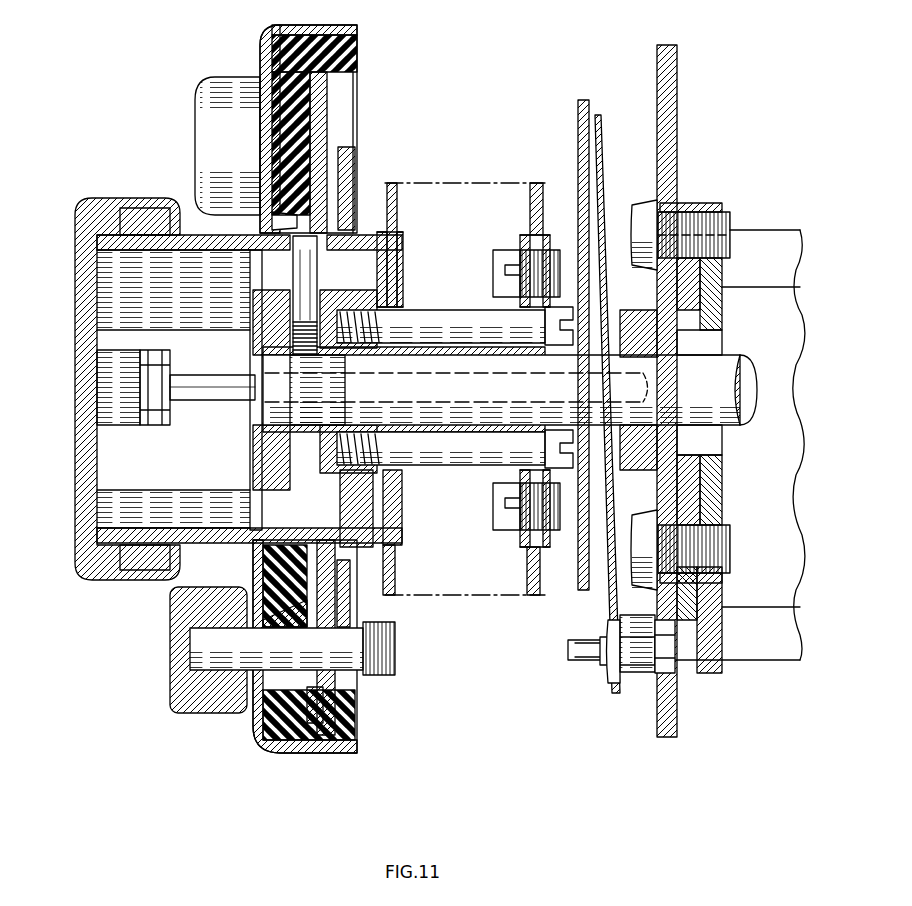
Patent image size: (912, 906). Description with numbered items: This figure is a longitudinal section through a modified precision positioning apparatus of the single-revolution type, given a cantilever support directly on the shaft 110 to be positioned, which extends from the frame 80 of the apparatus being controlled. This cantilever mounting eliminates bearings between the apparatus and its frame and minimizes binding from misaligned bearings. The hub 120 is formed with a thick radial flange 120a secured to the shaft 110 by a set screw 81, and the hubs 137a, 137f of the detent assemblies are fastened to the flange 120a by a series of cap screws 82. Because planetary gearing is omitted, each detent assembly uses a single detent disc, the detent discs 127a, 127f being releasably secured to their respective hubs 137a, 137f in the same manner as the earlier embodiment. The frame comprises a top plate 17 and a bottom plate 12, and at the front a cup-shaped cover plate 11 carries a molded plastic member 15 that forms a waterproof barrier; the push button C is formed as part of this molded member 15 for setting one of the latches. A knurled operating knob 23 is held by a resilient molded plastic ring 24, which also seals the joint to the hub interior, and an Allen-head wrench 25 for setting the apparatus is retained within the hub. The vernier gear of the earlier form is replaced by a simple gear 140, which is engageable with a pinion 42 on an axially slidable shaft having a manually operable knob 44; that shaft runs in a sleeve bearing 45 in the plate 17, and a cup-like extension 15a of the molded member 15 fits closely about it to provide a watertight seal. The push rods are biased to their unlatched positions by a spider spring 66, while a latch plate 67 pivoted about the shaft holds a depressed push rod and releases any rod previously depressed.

The cover plate 11 is at (270, 26).
The bottom plate 12 is at (678, 97).
The molded plastic member 15 is at (355, 45).
The cup-like extension 15a is at (255, 700).
The top plate 17 is at (327, 100).
The operating knob 23 is at (77, 340).
The resilient molded plastic ring 24 is at (152, 215).
The Allen-head wrench 25 is at (213, 392).
The pinion 42 is at (397, 657).
The manually operable knob 44 is at (172, 645).
The sleeve bearing 45 is at (340, 687).
The spider spring 66 is at (608, 178).
The latch plate 67 is at (590, 100).
The frame 80 is at (713, 205).
The set screw 81 is at (318, 272).
The cap screws 82 is at (483, 320).
The shaft 110 is at (733, 365).
The hub 120 is at (230, 247).
The radial flange 120a is at (265, 322).
The detent disc 127a is at (387, 195).
The detent disc 127f is at (545, 200).
The hub 137a is at (403, 297).
The hub 137f is at (548, 250).
The gear 140 is at (355, 160).
The push button C is at (195, 133).